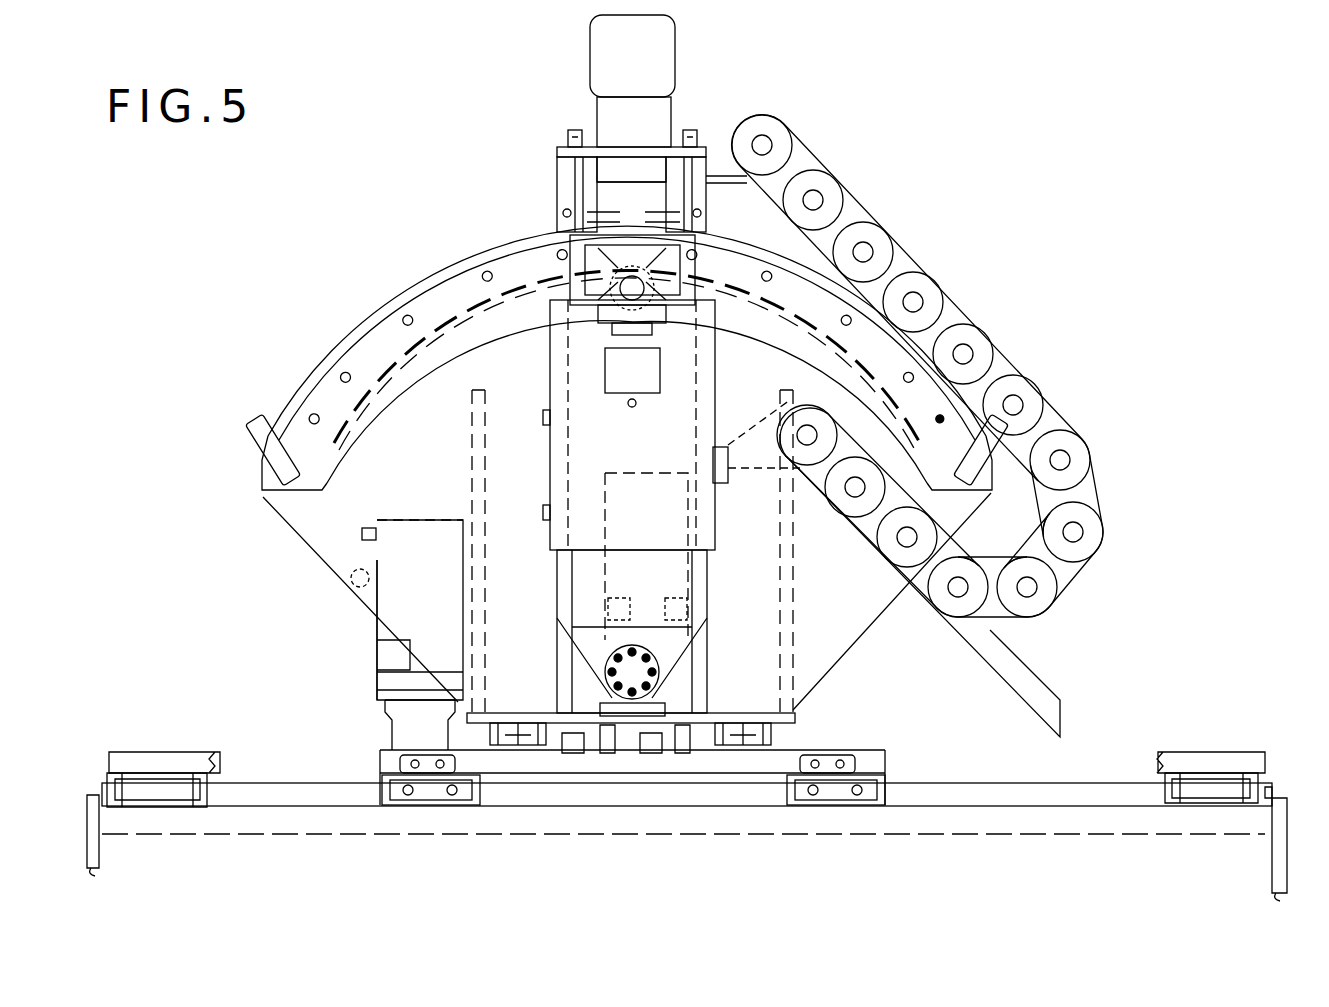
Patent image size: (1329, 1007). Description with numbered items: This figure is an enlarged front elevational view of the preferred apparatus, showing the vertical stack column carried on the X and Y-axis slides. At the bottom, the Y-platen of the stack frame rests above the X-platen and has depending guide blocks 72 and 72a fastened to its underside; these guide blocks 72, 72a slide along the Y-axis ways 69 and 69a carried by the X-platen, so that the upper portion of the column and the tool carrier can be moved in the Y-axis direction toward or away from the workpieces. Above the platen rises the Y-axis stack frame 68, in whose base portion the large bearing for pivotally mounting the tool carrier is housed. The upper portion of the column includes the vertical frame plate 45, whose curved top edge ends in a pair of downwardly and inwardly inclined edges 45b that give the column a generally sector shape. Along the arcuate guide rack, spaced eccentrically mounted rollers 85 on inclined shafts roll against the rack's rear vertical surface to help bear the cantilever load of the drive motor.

The vertical frame plate 45 is at (455, 265).
The rollers 85 is at (510, 245).
The downwardly and inwardly inclined edges 45b is at (312, 558).
The guide block 72a is at (508, 712).
The Y-axis stack frame 68 is at (700, 665).
The guide block 72 is at (775, 742).
The Y-axis way 69a is at (520, 775).
The Y-axis way 69 is at (745, 770).